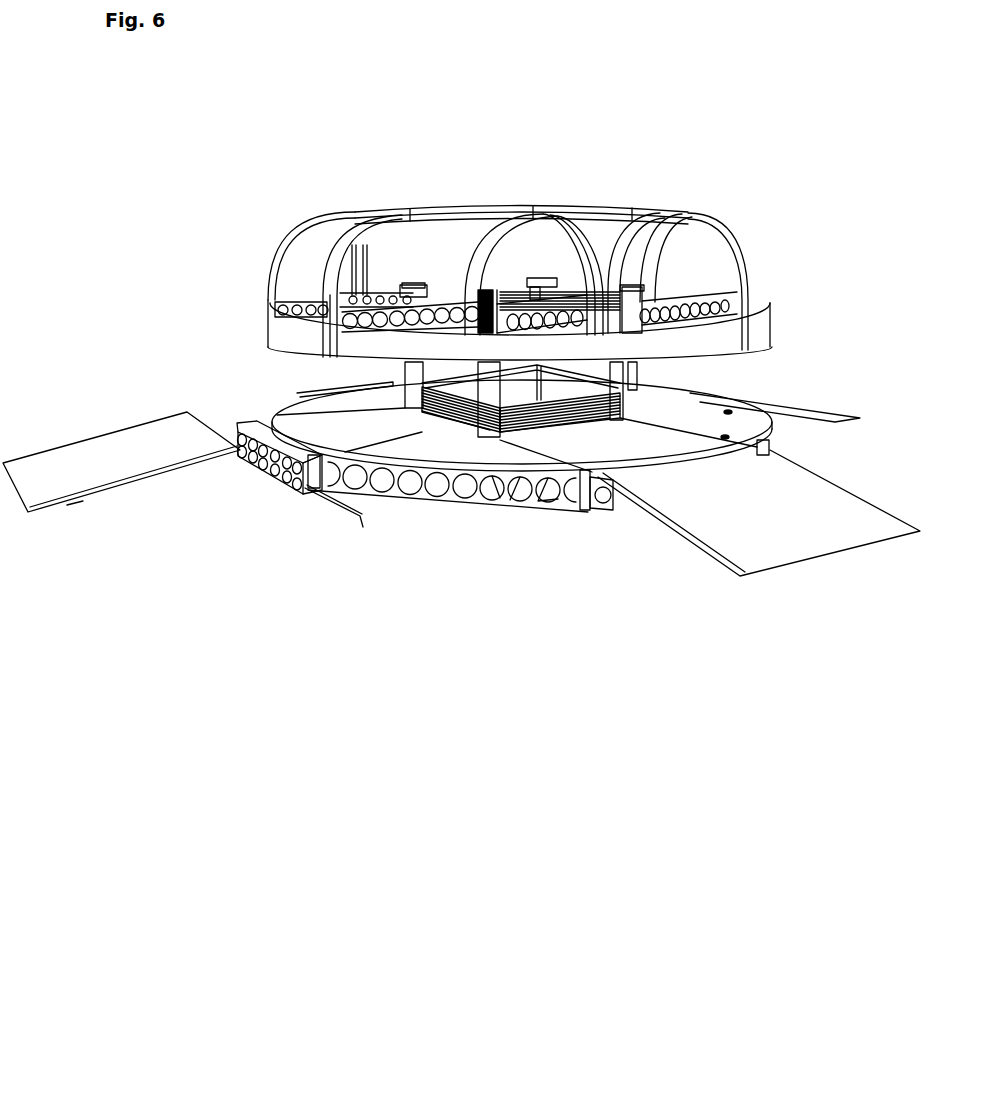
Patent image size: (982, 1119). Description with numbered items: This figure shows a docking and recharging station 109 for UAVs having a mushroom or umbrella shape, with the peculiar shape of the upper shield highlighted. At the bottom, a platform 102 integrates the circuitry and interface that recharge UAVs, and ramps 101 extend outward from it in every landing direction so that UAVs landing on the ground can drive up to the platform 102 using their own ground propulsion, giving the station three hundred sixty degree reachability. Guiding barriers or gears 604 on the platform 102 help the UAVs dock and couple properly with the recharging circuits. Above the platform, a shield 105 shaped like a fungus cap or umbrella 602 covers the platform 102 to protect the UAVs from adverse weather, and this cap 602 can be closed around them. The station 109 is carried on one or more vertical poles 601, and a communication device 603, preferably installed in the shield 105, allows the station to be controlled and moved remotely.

The ramp 101 is at (121, 455).
The platform 102 is at (472, 465).
The shield 105 is at (693, 253).
The docking and recharging station 109 is at (550, 620).
The vertical pole 601 is at (418, 415).
The umbrella cap 602 is at (467, 213).
The communication device 603 is at (532, 215).
The guiding barriers or gears 604 is at (555, 472).